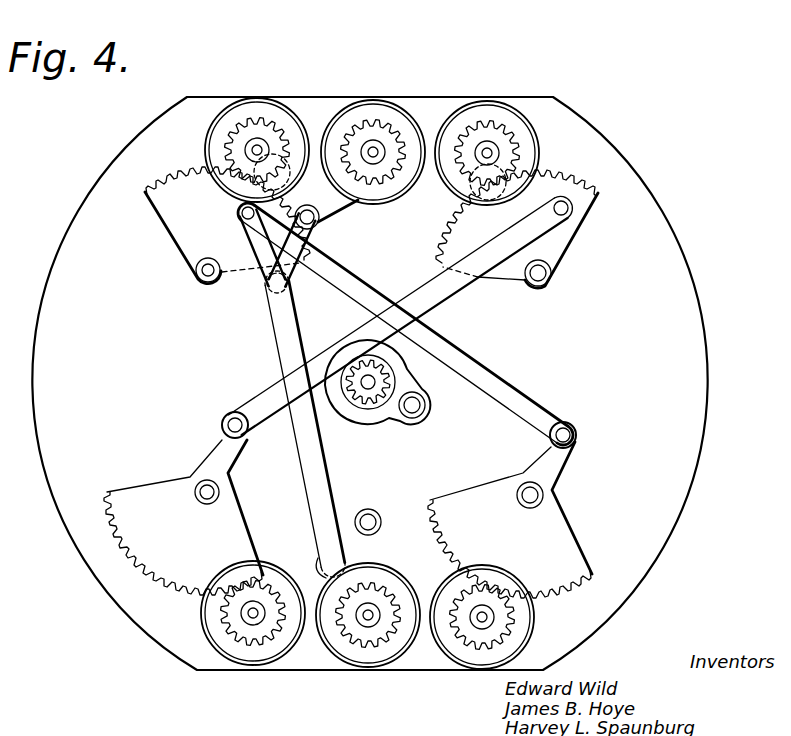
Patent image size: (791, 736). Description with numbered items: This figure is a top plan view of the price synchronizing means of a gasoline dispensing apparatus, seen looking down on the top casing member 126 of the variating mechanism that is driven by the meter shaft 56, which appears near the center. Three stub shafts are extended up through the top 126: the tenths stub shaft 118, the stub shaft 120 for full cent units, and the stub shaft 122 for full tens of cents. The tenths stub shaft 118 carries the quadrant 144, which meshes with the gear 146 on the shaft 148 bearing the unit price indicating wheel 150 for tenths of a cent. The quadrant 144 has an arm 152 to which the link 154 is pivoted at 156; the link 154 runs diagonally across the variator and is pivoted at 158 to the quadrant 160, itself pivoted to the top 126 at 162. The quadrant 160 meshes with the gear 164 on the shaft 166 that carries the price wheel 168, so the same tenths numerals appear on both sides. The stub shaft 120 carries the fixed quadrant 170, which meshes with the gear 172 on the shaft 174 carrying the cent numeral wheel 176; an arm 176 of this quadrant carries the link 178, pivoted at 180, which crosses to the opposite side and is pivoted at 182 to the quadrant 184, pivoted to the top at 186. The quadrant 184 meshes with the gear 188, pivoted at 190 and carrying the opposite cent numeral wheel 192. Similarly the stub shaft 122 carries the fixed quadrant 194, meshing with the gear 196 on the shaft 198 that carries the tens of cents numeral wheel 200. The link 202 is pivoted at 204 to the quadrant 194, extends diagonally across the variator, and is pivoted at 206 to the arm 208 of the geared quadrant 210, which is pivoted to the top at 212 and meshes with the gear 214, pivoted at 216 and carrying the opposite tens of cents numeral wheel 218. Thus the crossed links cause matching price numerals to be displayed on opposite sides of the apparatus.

The meter shaft 56 is at (368, 384).
The tenths stub shaft 118 is at (545, 493).
The stub shaft for full cent units 120 is at (320, 218).
The stub shaft for full tens of cents 122 is at (552, 273).
The top casing member 126 is at (703, 421).
The quadrant 144 is at (545, 522).
The gear 146 is at (492, 607).
The shaft 148 is at (492, 618).
The unit price indicating wheel 150 is at (516, 638).
The arm 152 is at (576, 447).
The link 154 is at (483, 373).
The pivot 156 is at (574, 440).
The pivot 158 is at (238, 214).
The quadrant 160 is at (190, 238).
The pivot 162 is at (196, 270).
The gear 164 is at (233, 128).
The shaft 166 is at (257, 148).
The price wheel 168 is at (270, 112).
The quadrant 170 is at (315, 147).
The gear 172 is at (375, 150).
The shaft 174 is at (370, 130).
The cent numeral wheel 176 is at (425, 118).
The link 178 is at (275, 327).
The pivot 180 is at (275, 282).
The pivot 182 is at (328, 570).
The quadrant 184 is at (407, 503).
The pivot 186 is at (370, 520).
The gear 188 is at (360, 618).
The pivot 190 is at (400, 658).
The opposite cent numeral wheel 192 is at (343, 643).
The quadrant 194 is at (577, 227).
The gear 196 is at (505, 155).
The shaft 198 is at (488, 152).
The tens of cents numeral wheel 200 is at (527, 150).
The link 202 is at (460, 282).
The pivot 204 is at (567, 207).
The pivot 206 is at (234, 412).
The arm 208 is at (245, 442).
The geared quadrant 210 is at (127, 498).
The pivot 212 is at (207, 480).
The gear 214 is at (238, 603).
The pivot 216 is at (248, 615).
The opposite tens of cents numeral wheel 218 is at (238, 650).